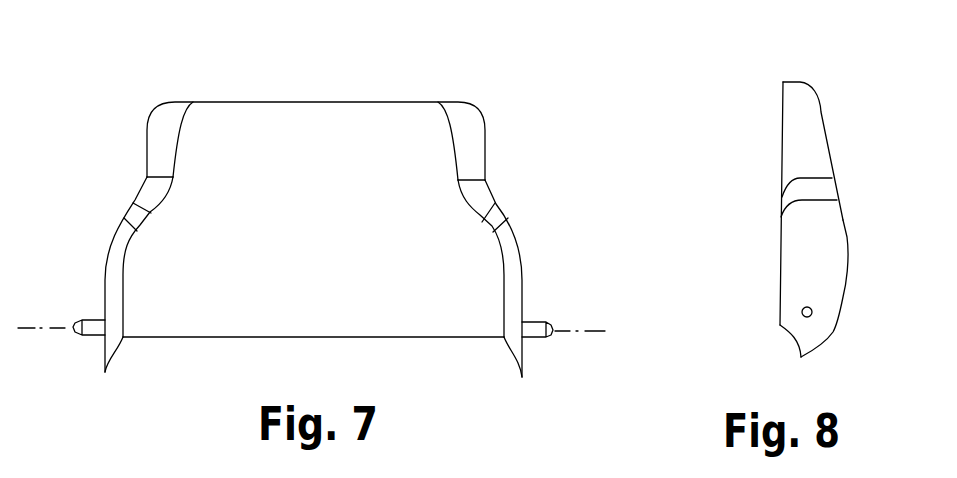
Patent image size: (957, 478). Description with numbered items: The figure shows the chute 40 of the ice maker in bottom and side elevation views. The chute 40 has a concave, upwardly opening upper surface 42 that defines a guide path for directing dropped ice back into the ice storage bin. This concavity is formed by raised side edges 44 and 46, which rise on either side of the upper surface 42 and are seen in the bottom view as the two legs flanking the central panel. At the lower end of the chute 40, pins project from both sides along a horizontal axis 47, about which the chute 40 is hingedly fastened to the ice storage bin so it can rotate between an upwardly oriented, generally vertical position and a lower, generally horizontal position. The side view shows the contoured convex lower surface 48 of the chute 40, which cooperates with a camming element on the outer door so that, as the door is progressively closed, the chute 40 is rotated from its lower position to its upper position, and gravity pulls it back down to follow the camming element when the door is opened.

In FIG. 7, the chute 40 is at (228, 101).
In FIG. 8, the chute 40 is at (780, 243).
In FIG. 7, the upper surface 42 is at (285, 229).
In FIG. 7, the raised side edge 44 is at (112, 263).
In FIG. 8, the raised side edge 44 is at (803, 265).
In FIG. 7, the raised side edge 46 is at (520, 238).
In FIG. 7, the horizontal axis 47 is at (53, 325).
In FIG. 8, the lower surface 48 is at (781, 158).